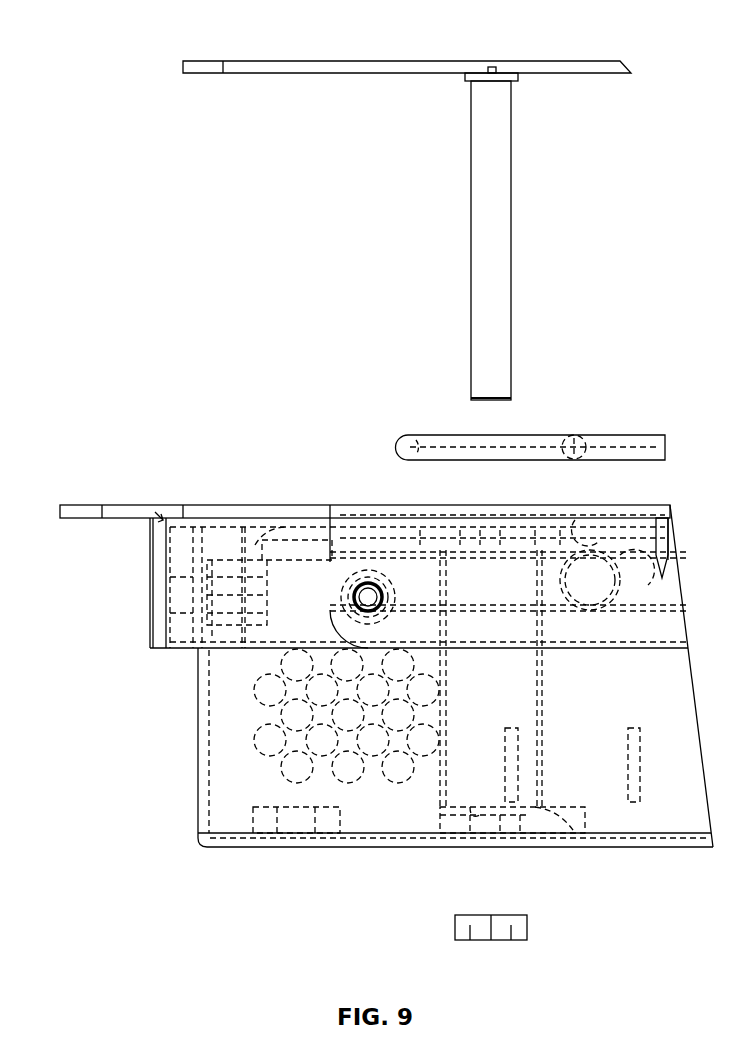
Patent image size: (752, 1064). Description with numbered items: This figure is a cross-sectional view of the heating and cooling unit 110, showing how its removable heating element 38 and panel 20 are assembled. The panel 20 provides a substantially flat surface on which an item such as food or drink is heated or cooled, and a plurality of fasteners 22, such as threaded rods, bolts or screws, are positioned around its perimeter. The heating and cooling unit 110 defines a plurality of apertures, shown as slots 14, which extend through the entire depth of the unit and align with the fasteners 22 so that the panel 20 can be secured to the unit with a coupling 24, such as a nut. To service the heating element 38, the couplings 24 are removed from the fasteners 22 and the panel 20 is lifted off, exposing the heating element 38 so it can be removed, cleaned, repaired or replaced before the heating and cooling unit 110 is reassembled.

The heating and cooling unit 110 is at (86, 48).
The panel 20 is at (610, 47).
The fasteners 22 is at (505, 230).
The heating element 38 is at (660, 434).
The slots 14 is at (478, 748).
The coupling 24 is at (487, 944).